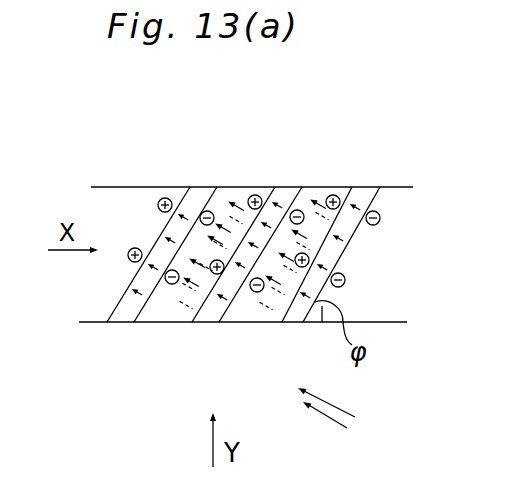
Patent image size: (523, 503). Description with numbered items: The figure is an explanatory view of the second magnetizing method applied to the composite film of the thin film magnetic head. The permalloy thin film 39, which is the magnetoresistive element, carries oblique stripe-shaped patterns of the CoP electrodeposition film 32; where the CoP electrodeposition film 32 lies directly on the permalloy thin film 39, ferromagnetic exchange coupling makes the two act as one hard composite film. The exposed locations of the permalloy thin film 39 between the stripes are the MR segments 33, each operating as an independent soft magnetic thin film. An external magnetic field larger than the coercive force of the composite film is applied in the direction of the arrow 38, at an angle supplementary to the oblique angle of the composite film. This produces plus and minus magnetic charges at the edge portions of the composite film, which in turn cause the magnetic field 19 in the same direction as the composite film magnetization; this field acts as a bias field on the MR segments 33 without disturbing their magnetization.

The magnetic field 19 is at (190, 297).
The CoP electrodeposition film 32 is at (193, 198).
The MR segment 33 is at (239, 188).
The magnetizing direction arrow 38 is at (346, 418).
The permalloy thin film 39 is at (392, 202).